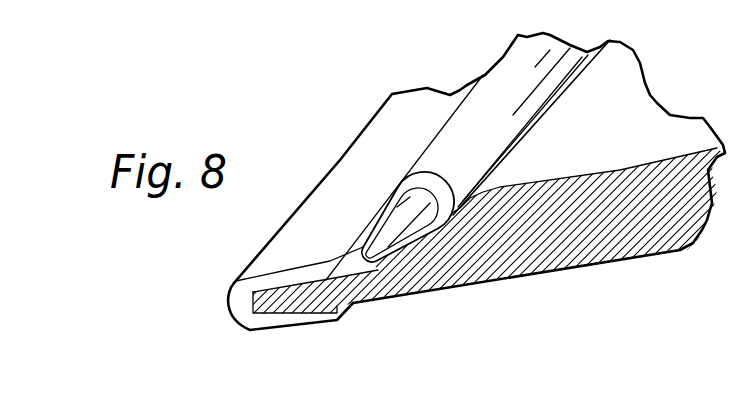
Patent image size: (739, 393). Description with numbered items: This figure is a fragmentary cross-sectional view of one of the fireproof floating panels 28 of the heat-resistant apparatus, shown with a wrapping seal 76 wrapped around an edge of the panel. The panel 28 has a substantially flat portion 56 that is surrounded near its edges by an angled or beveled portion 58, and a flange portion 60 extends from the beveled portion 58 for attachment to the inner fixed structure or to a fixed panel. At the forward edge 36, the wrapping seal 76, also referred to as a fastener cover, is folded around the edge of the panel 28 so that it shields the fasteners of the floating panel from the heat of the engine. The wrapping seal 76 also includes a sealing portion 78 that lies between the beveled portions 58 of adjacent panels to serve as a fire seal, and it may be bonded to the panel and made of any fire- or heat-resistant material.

The floating panel 28 is at (613, 257).
The forward edge 36 is at (252, 297).
The flat portion 56 is at (628, 108).
The angled or beveled portion 58 is at (433, 237).
The flange portion 60 is at (303, 297).
The wrapping seal 76 is at (333, 193).
The sealing portion 78 is at (495, 108).